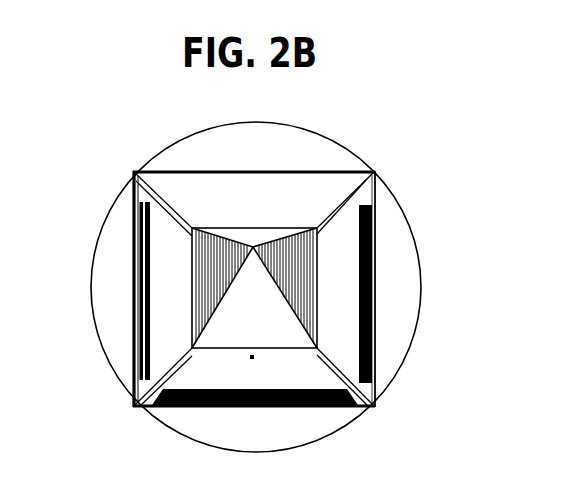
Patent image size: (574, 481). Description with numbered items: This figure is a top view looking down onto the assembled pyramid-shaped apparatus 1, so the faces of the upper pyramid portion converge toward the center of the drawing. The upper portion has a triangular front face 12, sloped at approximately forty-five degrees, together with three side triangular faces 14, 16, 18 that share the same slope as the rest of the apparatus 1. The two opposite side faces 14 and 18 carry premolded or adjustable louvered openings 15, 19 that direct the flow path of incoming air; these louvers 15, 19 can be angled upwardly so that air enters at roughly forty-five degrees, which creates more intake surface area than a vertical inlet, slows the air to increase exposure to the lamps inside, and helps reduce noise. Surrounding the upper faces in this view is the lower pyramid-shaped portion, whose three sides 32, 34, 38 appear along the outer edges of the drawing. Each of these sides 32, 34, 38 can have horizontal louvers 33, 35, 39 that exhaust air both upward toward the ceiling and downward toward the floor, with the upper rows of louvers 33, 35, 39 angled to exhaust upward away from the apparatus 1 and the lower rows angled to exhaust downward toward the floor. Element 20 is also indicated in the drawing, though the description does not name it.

The apparatus 1 is at (406, 144).
The triangular front face 12 is at (268, 322).
The side triangular face 14 is at (193, 330).
The louvered openings 15 is at (212, 275).
The side triangular face 16 is at (253, 247).
The side triangular face 18 is at (375, 288).
The louvered openings 19 is at (305, 270).
The top wall 20 is at (225, 195).
The side of lower pyramid portion 32 is at (307, 365).
The horizontal louvers 33 is at (320, 410).
The side of lower pyramid portion 34 is at (168, 343).
The horizontal louvers 35 is at (136, 388).
The side of lower pyramid portion 38 is at (342, 343).
The horizontal louvers 39 is at (374, 357).